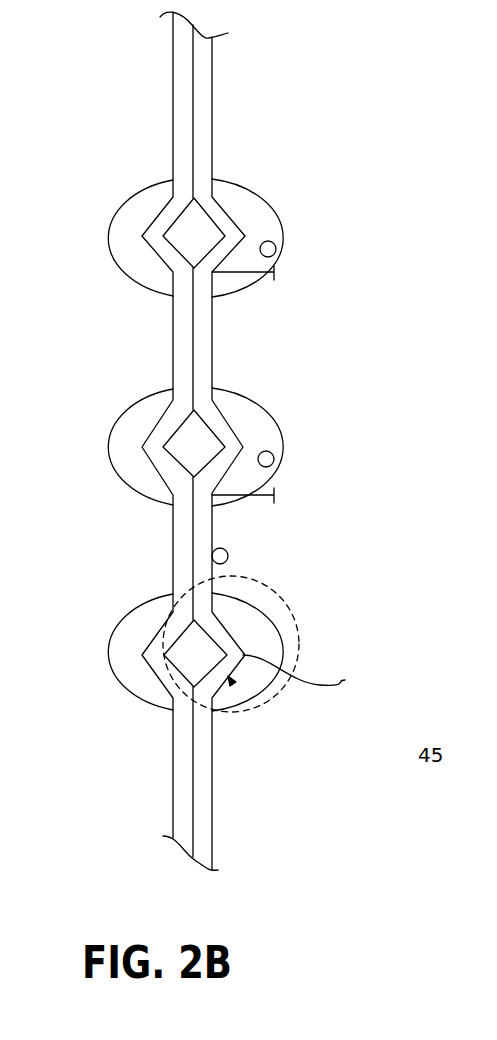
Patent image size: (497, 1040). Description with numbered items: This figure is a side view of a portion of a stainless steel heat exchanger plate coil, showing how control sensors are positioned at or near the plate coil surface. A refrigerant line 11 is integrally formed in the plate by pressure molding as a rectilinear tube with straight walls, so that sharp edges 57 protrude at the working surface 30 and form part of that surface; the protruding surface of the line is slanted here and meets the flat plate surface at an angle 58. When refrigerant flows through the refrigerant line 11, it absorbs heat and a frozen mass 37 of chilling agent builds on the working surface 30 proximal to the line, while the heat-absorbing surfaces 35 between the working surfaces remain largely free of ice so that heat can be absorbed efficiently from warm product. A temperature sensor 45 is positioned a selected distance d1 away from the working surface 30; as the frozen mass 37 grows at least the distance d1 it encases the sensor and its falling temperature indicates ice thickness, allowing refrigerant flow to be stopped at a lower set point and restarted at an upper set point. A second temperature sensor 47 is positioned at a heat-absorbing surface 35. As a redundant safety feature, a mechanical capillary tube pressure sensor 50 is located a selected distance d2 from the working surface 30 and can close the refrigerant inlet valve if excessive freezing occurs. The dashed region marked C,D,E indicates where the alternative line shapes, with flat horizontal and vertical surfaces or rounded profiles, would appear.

The refrigerant line 11 is at (190, 233).
The working surface 30 is at (212, 285).
The heat-absorbing surface 35 is at (190, 355).
The frozen mass 37 is at (245, 212).
The temperature sensor 45 is at (264, 460).
The temperature sensor 47 is at (228, 558).
The capillary tube pressure sensor 50 is at (272, 248).
The sharp edges 57 is at (308, 671).
The angle 58 is at (229, 678).
The selected distance d1 is at (248, 500).
The selected distance d2 is at (210, 303).
The alternative refrigerant line shapes C,D,E is at (285, 615).